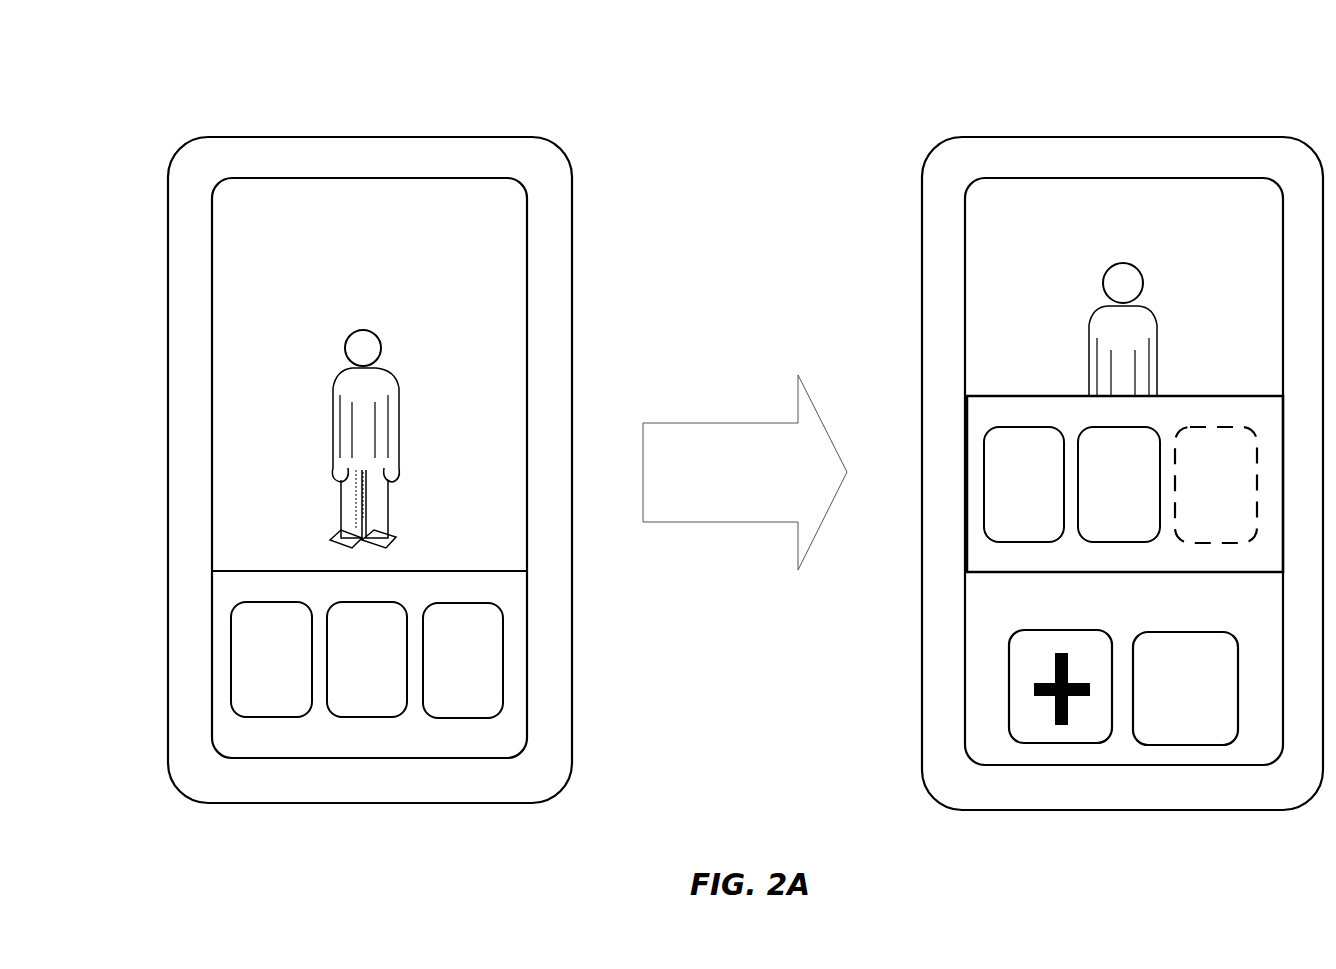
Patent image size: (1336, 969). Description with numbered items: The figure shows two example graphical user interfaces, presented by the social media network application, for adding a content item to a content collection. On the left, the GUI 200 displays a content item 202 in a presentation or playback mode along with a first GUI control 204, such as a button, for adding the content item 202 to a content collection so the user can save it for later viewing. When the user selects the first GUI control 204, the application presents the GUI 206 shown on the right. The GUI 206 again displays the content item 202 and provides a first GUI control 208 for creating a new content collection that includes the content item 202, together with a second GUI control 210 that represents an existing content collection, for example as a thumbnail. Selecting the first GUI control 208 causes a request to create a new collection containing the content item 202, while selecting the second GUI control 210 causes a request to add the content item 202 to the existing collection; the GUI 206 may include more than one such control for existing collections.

The GUI 200 is at (170, 52).
The content item 202 is at (1070, 268).
The first GUI control 204 is at (840, 572).
The GUI 206 is at (972, 64).
The first GUI control 208 is at (1077, 742).
The second GUI control 210 is at (1205, 743).